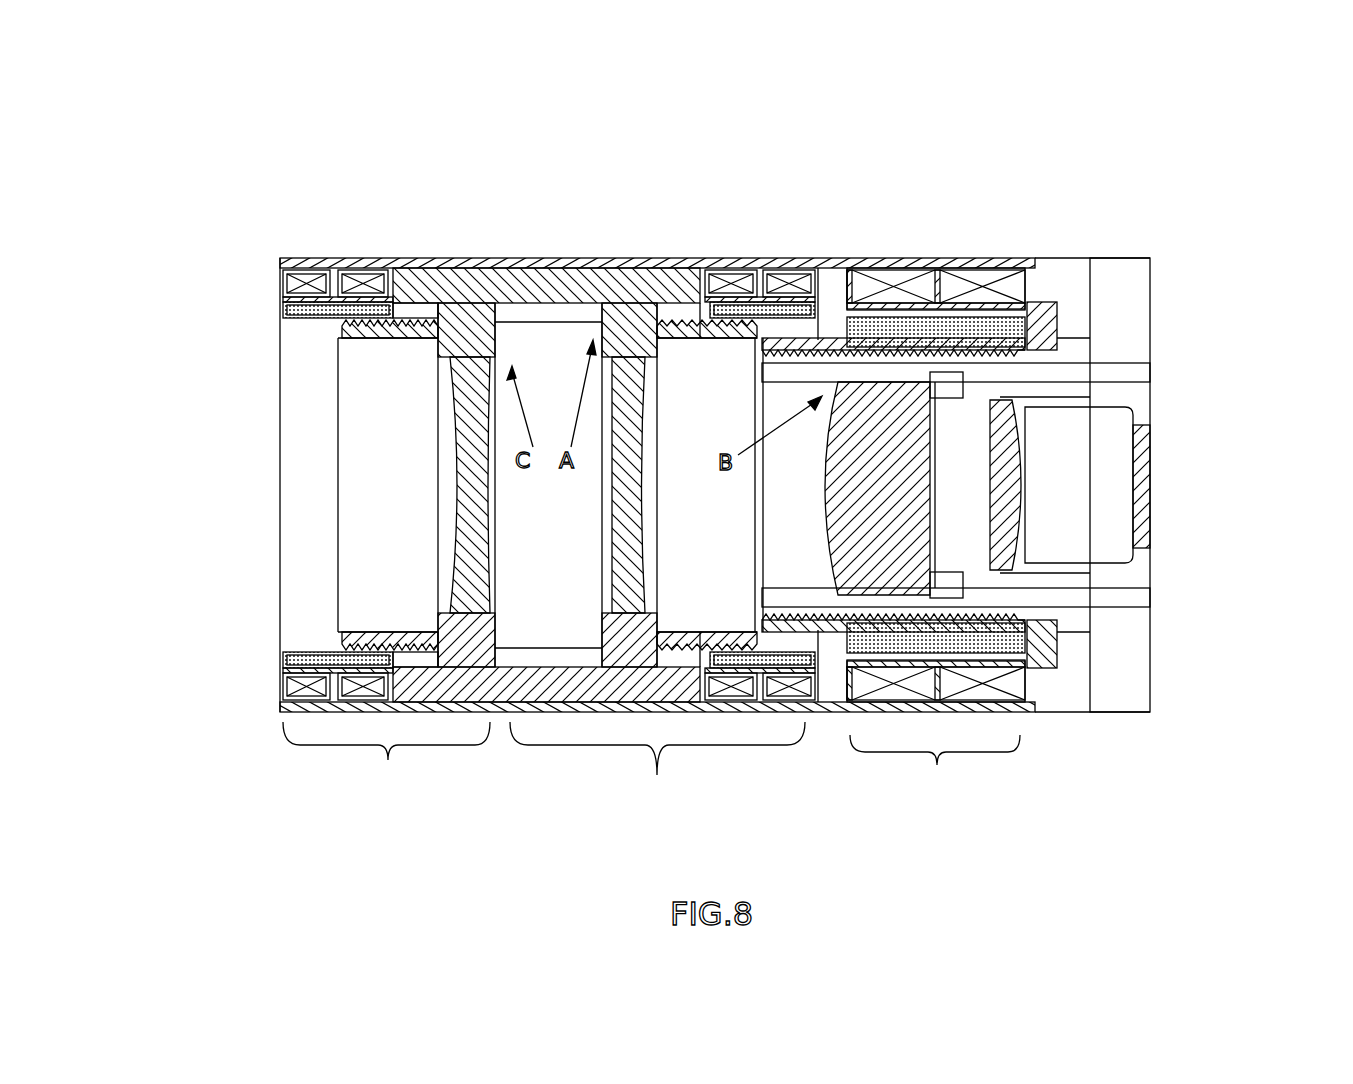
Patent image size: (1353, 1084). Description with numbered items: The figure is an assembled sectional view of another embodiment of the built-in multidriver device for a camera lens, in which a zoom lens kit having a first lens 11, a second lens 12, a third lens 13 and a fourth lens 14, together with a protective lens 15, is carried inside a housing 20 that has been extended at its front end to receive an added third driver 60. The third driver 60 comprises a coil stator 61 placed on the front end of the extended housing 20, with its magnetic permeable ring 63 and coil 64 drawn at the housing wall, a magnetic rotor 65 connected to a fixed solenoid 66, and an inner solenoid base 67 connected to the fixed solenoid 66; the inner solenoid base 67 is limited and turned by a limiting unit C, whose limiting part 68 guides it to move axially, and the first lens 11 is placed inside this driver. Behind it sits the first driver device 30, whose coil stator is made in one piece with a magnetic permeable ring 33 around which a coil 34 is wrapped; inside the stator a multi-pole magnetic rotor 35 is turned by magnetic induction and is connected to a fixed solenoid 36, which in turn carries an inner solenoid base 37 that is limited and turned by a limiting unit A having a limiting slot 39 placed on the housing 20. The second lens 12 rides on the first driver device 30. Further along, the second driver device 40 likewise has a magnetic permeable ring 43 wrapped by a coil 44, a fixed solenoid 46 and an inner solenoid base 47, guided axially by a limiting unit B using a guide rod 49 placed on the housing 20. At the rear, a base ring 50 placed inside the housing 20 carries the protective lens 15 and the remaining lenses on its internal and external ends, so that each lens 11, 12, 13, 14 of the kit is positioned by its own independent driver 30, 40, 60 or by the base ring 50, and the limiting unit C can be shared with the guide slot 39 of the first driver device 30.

The first lens 11 is at (462, 520).
The second lens 12 is at (630, 258).
The third lens 13 is at (1088, 387).
The fourth lens 14 is at (1020, 538).
The protective lens 15 is at (1148, 504).
The housing 20 is at (1015, 258).
The first driver device 30 is at (664, 542).
The magnetic permeable ring 33 is at (698, 258).
The coil 34 is at (740, 258).
The magnetic rotor 35 is at (805, 258).
The fixed solenoid 36 is at (772, 258).
The inner solenoid base 37 is at (662, 258).
The limiting slot 39 is at (527, 258).
The second driver device 40 is at (922, 589).
The magnetic permeable ring 43 is at (845, 258).
The coil 44 is at (886, 258).
The fixed solenoid 46 is at (992, 258).
The inner solenoid base 47 is at (931, 258).
The guide rod 49 is at (952, 258).
The base ring 50 is at (1142, 292).
The third driver 60 is at (386, 763).
The coil stator 61 is at (298, 258).
The lens barrel 63 is at (397, 258).
The coil 64 is at (337, 258).
The magnetic rotor 65 is at (282, 299).
The fixed solenoid 66 is at (340, 345).
The inner solenoid base 67 is at (400, 335).
The limiting part 68 is at (485, 258).